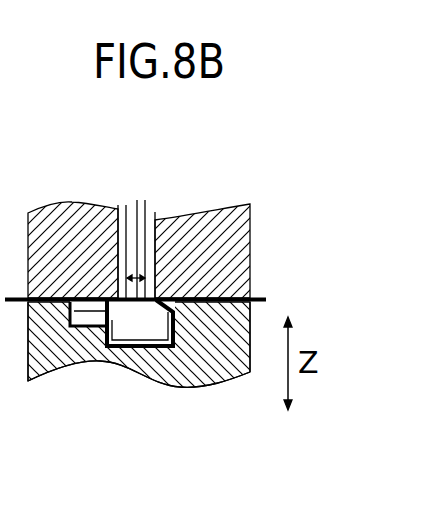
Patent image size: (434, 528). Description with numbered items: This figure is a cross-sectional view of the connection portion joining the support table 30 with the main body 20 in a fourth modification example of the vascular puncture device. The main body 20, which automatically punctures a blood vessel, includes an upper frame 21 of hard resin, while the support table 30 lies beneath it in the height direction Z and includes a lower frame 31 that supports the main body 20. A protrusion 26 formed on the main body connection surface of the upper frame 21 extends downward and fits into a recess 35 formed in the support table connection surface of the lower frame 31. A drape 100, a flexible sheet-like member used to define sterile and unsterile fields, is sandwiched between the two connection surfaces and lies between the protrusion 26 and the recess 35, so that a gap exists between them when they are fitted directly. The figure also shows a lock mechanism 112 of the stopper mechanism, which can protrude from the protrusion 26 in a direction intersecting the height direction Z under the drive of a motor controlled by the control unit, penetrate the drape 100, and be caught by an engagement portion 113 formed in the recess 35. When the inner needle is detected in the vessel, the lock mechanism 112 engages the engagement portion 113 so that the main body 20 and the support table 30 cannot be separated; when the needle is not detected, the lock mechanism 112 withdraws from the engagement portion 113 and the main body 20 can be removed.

The main body 20 is at (90, 203).
The upper frame 21 is at (115, 210).
The lock mechanism 112 is at (150, 215).
The recess 35 is at (200, 253).
The drape 100 is at (255, 295).
The engagement portion 113 is at (80, 328).
The protrusion 26 is at (133, 348).
The support table 30 is at (185, 378).
The lower frame 31 is at (208, 366).